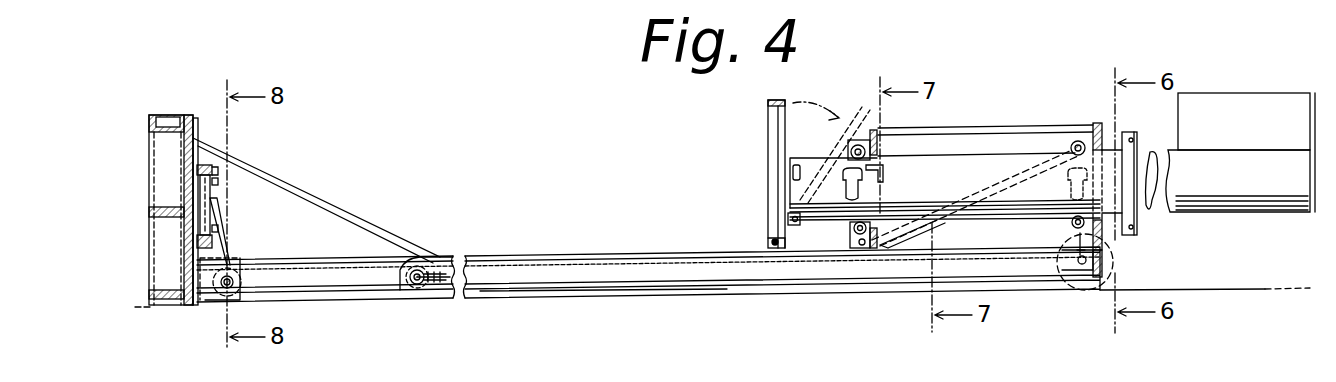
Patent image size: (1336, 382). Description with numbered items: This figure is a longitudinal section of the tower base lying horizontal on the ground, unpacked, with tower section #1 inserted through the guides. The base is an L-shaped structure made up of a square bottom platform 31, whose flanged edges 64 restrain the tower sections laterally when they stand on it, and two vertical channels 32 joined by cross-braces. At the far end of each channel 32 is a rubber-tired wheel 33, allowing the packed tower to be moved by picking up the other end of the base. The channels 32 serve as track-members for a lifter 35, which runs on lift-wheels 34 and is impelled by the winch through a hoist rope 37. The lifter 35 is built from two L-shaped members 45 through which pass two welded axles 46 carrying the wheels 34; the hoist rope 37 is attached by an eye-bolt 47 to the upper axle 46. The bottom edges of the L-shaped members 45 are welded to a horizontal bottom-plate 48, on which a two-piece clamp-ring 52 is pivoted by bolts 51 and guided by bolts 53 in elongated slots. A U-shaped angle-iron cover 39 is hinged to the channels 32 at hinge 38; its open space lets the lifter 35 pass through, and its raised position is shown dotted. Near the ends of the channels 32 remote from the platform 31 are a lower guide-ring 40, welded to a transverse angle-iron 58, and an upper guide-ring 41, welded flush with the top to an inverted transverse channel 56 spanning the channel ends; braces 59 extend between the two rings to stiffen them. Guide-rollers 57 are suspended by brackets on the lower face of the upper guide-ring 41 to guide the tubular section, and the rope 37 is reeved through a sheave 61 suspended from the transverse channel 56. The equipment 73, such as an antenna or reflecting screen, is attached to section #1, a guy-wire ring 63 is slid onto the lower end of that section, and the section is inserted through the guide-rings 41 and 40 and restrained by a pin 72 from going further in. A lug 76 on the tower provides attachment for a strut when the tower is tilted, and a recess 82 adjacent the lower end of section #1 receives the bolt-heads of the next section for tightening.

The bottom platform 31 is at (183, 120).
The flanged edges 64 is at (197, 118).
The clamp-ring 52 is at (214, 186).
The bottom-plate 48 is at (200, 185).
The bolts 51 is at (222, 232).
The bolts 53 is at (214, 218).
The lifter 35 is at (228, 248).
The L-shaped members 45 is at (357, 290).
The axles 46 is at (233, 282).
The lift-wheels 34 is at (222, 300).
The eye-bolt 47 is at (448, 280).
The vertical channels 32 is at (637, 254).
The hoist rope 37 is at (713, 265).
The cover 39 is at (768, 135).
The hinge 38 is at (772, 240).
The recess 82 is at (793, 170).
The braces 59 is at (1020, 127).
The lower guide-ring 40 is at (878, 140).
The guide-rollers 57 is at (859, 145).
The lug 76 is at (862, 247).
The pin 72 is at (884, 167).
The transverse angle-iron 58 is at (905, 240).
The upper guide-ring 41 is at (1098, 125).
The transverse channel 56 is at (1103, 270).
The rubber-tired wheel 33 is at (1110, 262).
The sheave 61 is at (1075, 290).
The guy-wire ring 63 is at (1133, 148).
The equipment 73 is at (1258, 103).
The section # 1 is at (1270, 195).